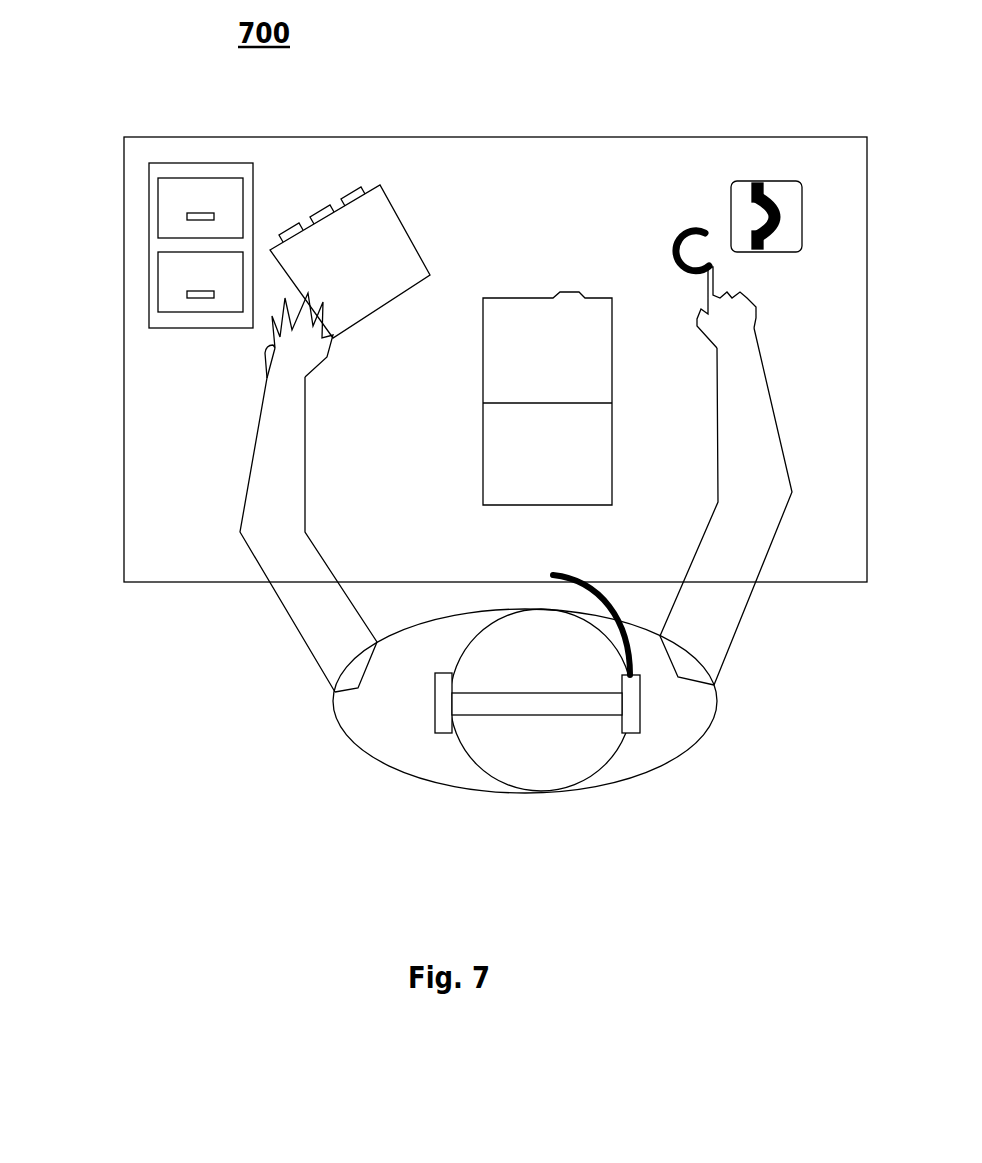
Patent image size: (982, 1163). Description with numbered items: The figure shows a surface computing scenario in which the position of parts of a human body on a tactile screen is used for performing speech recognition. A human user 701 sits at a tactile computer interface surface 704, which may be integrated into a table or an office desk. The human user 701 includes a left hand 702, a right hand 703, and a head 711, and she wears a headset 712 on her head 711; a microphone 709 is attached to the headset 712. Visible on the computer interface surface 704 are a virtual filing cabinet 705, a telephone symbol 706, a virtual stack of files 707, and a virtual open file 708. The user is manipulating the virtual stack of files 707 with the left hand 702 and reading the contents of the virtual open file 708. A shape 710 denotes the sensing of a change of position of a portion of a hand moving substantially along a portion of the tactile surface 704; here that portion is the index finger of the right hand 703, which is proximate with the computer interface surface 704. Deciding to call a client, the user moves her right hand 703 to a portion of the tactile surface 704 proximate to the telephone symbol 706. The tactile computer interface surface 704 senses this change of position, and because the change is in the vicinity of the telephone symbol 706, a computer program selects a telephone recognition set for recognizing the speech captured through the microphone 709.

The human user 701 is at (328, 718).
The left hand 702 is at (277, 348).
The right hand 703 is at (760, 325).
The tactile computer interface surface 704 is at (123, 152).
The virtual filing cabinet 705 is at (149, 293).
The telephone symbol 706 is at (740, 177).
The virtual stack of files 707 is at (335, 194).
The virtual open file 708 is at (483, 452).
The microphone 709 is at (548, 575).
The shape 710 is at (670, 247).
The head 711 is at (467, 753).
The headset 712 is at (435, 715).